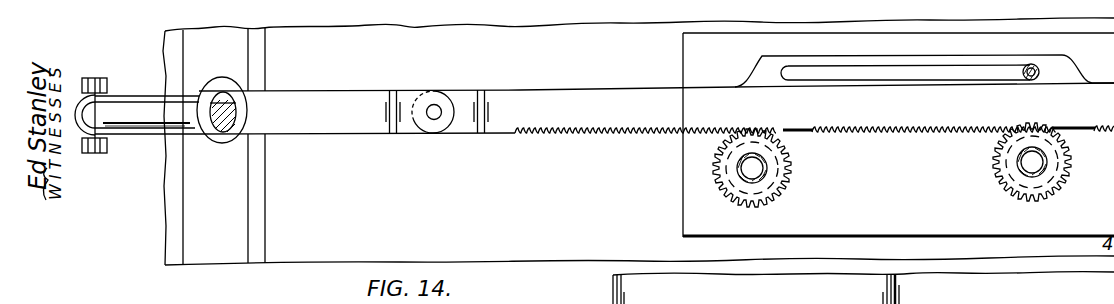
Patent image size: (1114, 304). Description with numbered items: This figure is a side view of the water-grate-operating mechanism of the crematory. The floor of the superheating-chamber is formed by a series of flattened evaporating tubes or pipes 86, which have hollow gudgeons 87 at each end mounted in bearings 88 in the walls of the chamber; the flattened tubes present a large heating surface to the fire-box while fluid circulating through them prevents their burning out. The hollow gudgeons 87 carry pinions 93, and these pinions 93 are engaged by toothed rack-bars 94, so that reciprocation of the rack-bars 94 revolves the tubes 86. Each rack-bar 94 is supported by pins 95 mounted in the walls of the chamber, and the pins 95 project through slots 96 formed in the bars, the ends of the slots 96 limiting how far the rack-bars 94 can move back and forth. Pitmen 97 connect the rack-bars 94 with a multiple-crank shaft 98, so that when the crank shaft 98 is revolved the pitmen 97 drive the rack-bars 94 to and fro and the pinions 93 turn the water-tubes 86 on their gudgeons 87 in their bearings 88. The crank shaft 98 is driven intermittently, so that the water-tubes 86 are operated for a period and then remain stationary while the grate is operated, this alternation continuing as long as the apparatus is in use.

The flattened evaporating tubes 86 is at (863, 288).
The hollow gudgeons 87 is at (757, 171).
The bearings 88 is at (1057, 167).
The pinions 93 is at (780, 164).
The rack-bars 94 is at (814, 108).
The pins 95 is at (1043, 73).
The slots 96 is at (865, 74).
The pitmen 97 is at (359, 112).
The multiple-crank shaft 98 is at (232, 107).